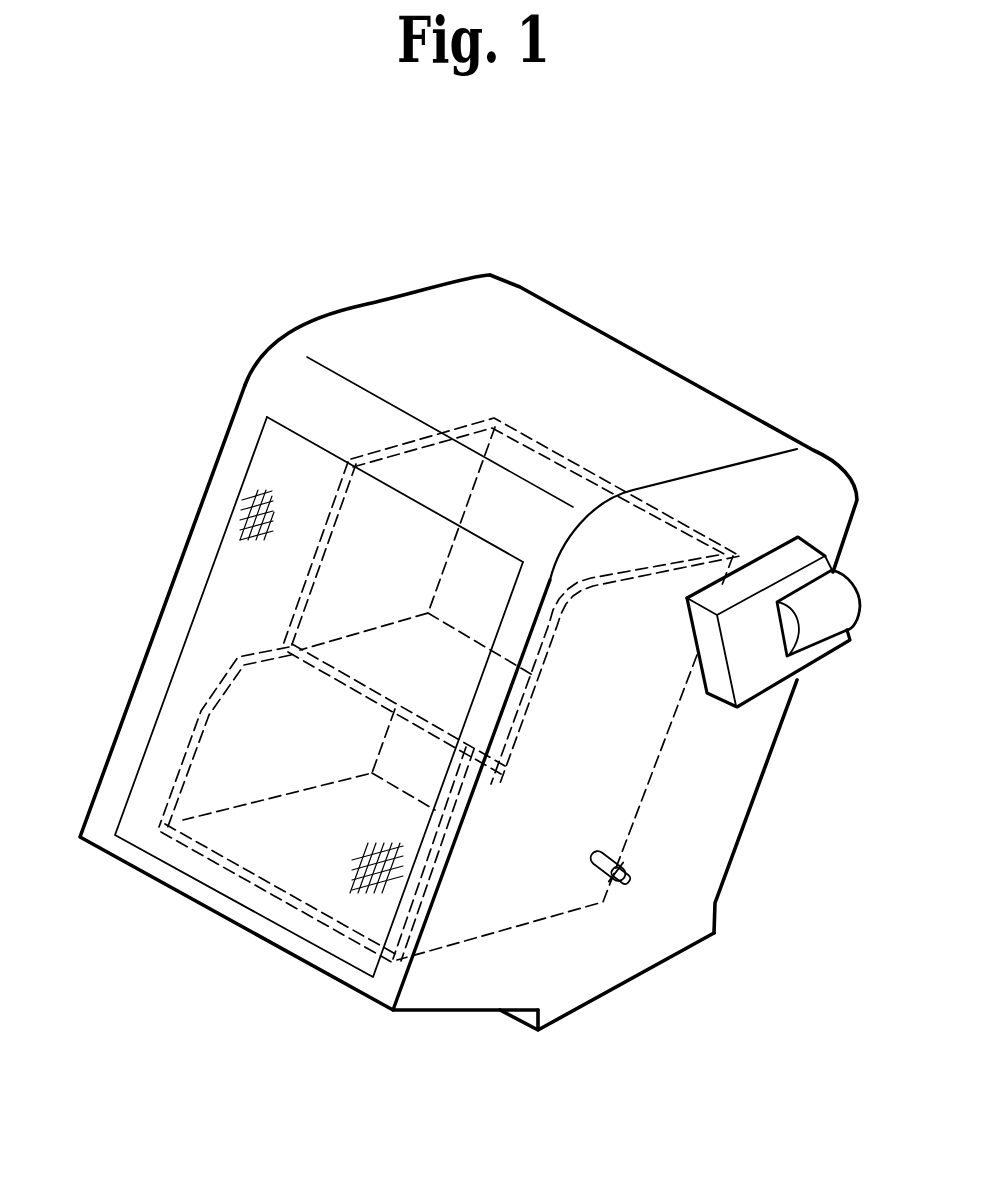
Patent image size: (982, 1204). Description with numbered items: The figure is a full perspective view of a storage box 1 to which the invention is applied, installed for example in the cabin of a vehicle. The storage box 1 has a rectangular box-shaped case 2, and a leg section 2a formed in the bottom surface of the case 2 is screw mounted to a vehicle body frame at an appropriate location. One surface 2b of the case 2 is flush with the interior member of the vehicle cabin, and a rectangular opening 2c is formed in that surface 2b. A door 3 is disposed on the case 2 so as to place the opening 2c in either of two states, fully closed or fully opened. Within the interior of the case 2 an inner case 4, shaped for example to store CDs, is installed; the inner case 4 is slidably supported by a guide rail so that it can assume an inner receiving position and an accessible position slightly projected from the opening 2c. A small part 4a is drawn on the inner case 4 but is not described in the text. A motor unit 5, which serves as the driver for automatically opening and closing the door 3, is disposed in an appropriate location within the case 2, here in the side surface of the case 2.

The storage box 1 is at (303, 253).
The case 2 is at (623, 350).
The leg section 2a is at (632, 977).
The surface 2b is at (267, 400).
The opening 2c is at (287, 427).
The door 3 is at (213, 613).
The inner case 4 is at (477, 427).
The connector 4a is at (622, 851).
The motor unit 5 is at (825, 652).